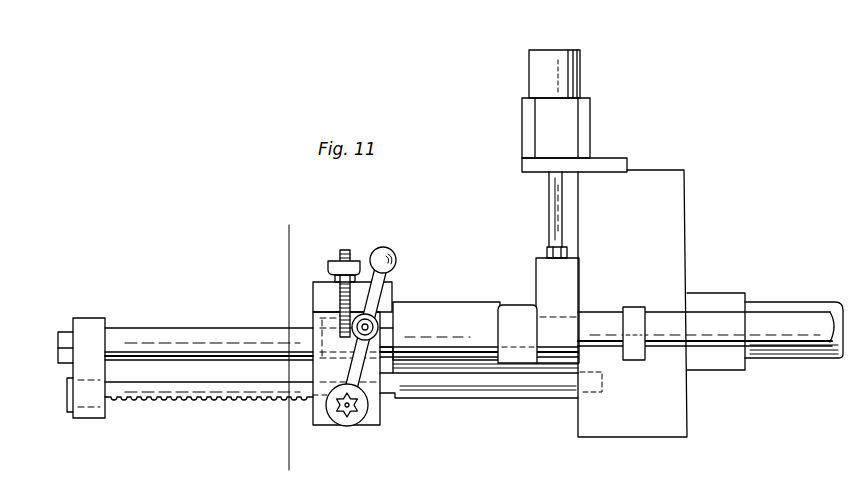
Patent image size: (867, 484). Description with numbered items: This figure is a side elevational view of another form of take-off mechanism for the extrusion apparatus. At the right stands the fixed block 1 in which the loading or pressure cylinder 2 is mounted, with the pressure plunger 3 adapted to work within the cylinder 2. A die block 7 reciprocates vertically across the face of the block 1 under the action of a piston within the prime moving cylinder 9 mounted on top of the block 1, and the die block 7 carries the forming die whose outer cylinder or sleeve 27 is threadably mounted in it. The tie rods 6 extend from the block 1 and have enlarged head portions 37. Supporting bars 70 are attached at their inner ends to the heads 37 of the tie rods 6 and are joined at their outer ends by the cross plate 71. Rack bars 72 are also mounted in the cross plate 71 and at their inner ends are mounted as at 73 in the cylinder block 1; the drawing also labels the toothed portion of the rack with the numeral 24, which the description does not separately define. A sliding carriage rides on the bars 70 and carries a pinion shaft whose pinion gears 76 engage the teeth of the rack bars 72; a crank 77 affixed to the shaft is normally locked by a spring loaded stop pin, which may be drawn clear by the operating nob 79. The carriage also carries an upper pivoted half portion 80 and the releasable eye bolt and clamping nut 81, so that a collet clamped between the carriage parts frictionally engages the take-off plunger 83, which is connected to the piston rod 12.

The fixed block 1 is at (665, 203).
The pressure cylinder 2 is at (712, 291).
The pressure plunger 3 is at (773, 303).
The tie rods 6 is at (790, 318).
The die block 7 is at (538, 263).
The prime moving cylinder 9 is at (567, 83).
The piston rod 12 is at (310, 240).
The rack teeth 24 is at (277, 400).
The outer cylinder or sleeve 27 is at (440, 307).
The enlarged head portions 37 is at (520, 315).
The supporting bars 70 is at (200, 334).
The cross plate 71 is at (93, 320).
The rack bars 72 is at (209, 407).
The rack bar mounting 73 is at (579, 400).
The pinion gears 76 is at (352, 430).
The crank 77 is at (362, 370).
The operating nob 79 is at (380, 331).
The upper pivoted half portion 80 is at (313, 292).
The releasable eye bolt and clamping nut 81 is at (331, 256).
The take-off plunger 83 is at (388, 304).